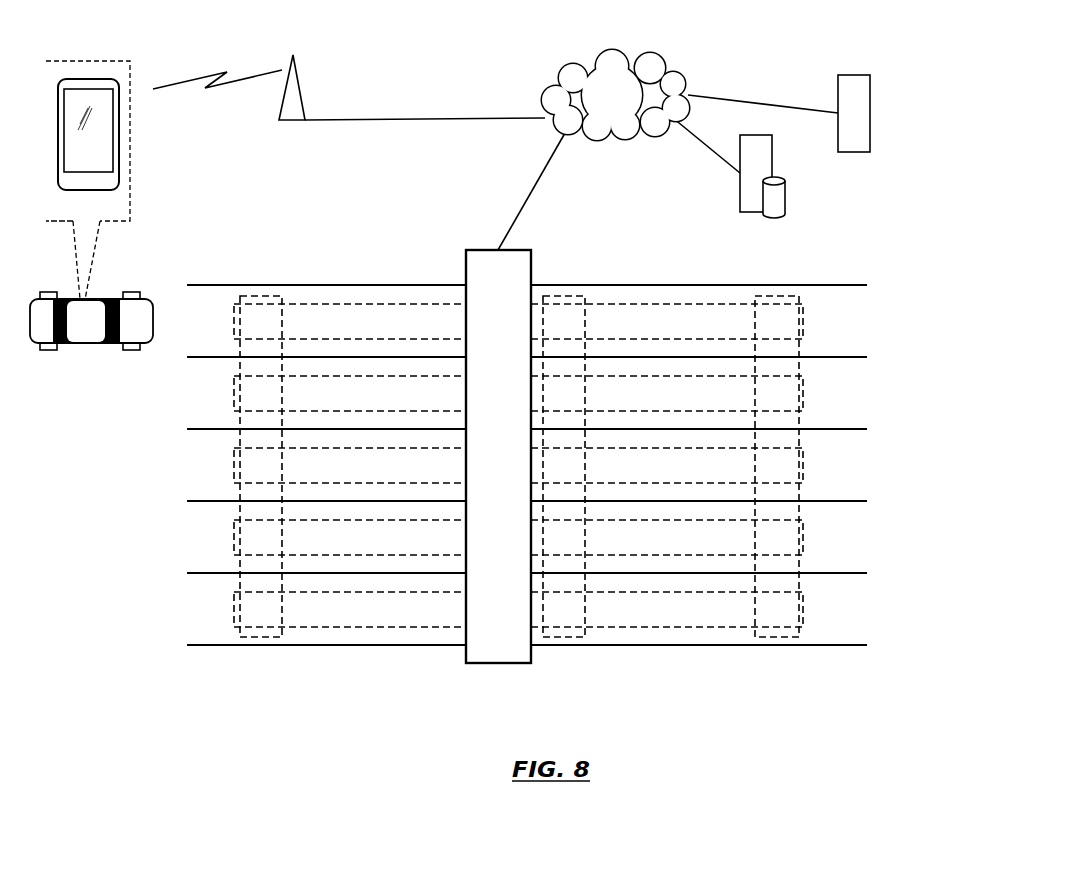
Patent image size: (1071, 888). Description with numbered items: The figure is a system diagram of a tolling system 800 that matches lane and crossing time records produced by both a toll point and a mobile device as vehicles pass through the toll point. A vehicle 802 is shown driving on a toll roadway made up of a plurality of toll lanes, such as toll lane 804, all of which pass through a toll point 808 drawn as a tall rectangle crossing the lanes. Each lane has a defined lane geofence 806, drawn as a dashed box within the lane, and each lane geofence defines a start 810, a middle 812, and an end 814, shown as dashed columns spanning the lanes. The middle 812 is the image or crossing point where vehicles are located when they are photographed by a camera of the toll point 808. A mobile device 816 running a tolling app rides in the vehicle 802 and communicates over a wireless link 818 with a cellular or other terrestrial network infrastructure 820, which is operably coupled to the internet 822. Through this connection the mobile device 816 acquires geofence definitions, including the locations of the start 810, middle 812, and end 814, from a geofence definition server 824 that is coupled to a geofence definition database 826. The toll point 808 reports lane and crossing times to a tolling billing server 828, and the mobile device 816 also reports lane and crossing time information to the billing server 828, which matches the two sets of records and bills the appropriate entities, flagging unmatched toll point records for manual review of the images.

The tolling system 800 is at (789, 38).
The vehicle 802 is at (83, 343).
The toll lane 804 is at (217, 312).
The lane geofence 806 is at (308, 304).
The toll point 808 is at (466, 258).
The start 810 is at (252, 638).
The middle 812 is at (565, 638).
The end 814 is at (782, 638).
The mobile device 816 is at (119, 172).
The wireless communication link 818 is at (190, 80).
The cellular or other terrestrial network infrastructure 820 is at (300, 93).
The internet 822 is at (570, 62).
The geofence definition server 824 is at (740, 193).
The database 826 is at (785, 208).
The tolling billing server 828 is at (870, 122).